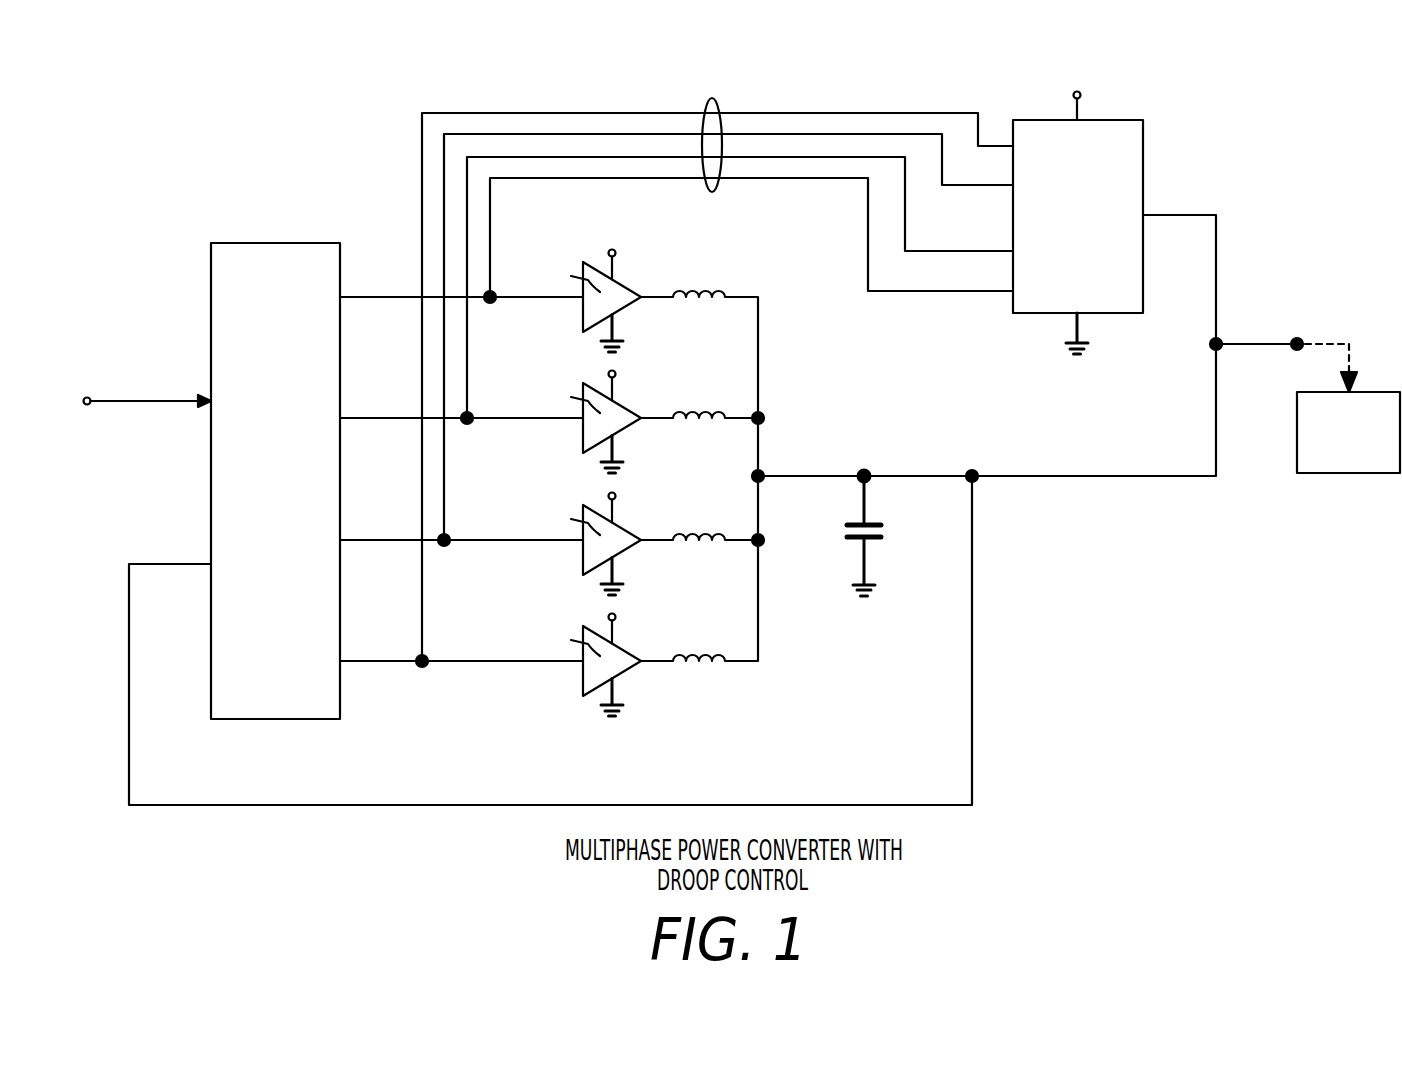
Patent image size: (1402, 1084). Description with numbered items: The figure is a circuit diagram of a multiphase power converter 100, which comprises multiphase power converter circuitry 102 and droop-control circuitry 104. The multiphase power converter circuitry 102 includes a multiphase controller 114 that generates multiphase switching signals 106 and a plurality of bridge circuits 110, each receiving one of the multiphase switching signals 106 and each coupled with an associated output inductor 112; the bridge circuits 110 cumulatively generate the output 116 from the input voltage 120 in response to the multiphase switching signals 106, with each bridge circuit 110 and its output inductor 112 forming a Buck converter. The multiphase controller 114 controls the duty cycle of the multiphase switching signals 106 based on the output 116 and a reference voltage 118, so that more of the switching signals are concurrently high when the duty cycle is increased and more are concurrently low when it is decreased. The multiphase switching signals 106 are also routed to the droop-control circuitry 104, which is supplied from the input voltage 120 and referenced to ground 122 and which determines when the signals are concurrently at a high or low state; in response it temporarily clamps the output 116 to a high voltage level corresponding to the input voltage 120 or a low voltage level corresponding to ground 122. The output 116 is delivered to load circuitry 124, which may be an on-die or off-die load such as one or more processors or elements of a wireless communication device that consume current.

The multiphase power converter 100 is at (158, 109).
The multiphase power converter circuitry 102 is at (1023, 638).
The droop-control circuitry 104 is at (1133, 118).
The multiphase switching signals 106 is at (712, 96).
The bridge circuits 110 is at (628, 284).
The output inductor 112 is at (722, 289).
The multiphase controller 114 is at (272, 243).
The output 116 is at (138, 562).
The reference voltage 118 is at (158, 400).
The input voltage 120 is at (615, 252).
The ground 122 is at (622, 718).
The load circuitry 124 is at (1352, 477).